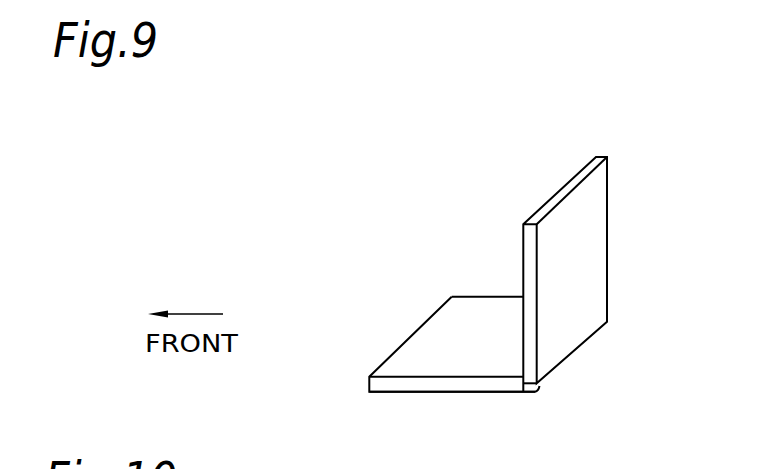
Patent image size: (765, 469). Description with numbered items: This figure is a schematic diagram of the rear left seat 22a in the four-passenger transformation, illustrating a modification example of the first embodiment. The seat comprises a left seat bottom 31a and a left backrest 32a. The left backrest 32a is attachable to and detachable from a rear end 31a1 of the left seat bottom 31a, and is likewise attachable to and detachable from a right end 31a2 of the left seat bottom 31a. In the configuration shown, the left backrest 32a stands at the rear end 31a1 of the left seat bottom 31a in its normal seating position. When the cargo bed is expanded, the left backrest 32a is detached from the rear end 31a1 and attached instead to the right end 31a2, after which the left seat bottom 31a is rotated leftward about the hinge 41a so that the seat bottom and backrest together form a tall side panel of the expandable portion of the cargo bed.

The rear left seat 22a is at (421, 192).
The left seat bottom 31a is at (453, 338).
The rear end of the left seat bottom 31a1 is at (543, 383).
The right end of the left seat bottom 31a2 is at (483, 296).
The left backrest 32a is at (580, 258).
The hinge 41a is at (443, 393).